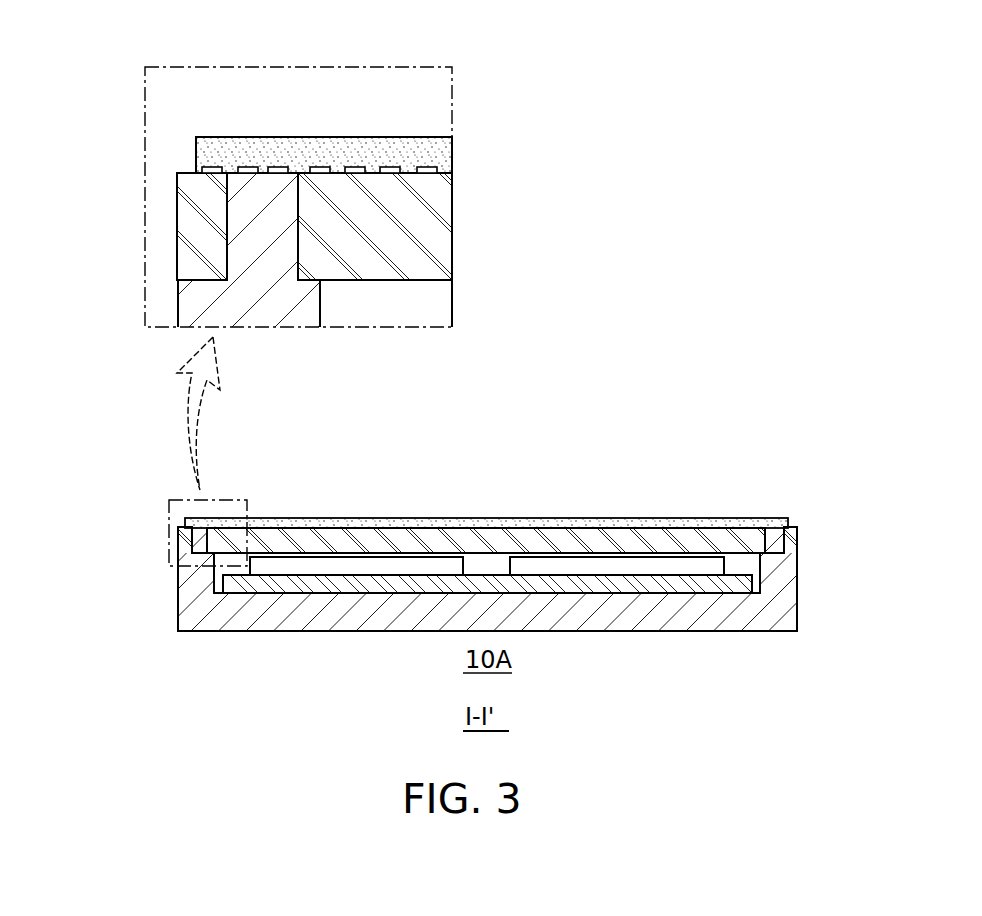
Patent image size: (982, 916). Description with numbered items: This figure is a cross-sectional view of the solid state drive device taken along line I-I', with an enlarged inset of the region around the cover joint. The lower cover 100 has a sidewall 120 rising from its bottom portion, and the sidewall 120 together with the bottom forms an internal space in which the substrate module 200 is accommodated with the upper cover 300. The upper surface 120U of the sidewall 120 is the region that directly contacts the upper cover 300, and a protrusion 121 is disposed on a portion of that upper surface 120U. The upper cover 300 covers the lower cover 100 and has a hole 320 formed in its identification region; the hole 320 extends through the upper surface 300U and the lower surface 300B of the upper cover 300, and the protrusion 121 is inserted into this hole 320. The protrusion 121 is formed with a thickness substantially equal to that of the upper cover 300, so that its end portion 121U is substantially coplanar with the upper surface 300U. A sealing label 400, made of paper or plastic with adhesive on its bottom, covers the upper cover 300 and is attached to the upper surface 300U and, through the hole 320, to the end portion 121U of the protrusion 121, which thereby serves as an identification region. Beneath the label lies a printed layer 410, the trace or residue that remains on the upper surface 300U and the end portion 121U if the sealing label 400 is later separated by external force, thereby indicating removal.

The lower cover 100 is at (783, 577).
The sidewall 120 is at (187, 305).
The upper surface of the sidewall 120U is at (188, 279).
The protrusion 121 is at (252, 200).
The end portion of the protrusion 121U is at (249, 172).
The substrate module 200 is at (602, 582).
The upper cover 300 is at (440, 205).
The upper surface of the upper cover 300U is at (370, 173).
The lower surface of the upper cover 300B is at (425, 280).
The hole 320 is at (298, 207).
The sealing label 400 is at (447, 153).
The printed layer 410 is at (437, 170).